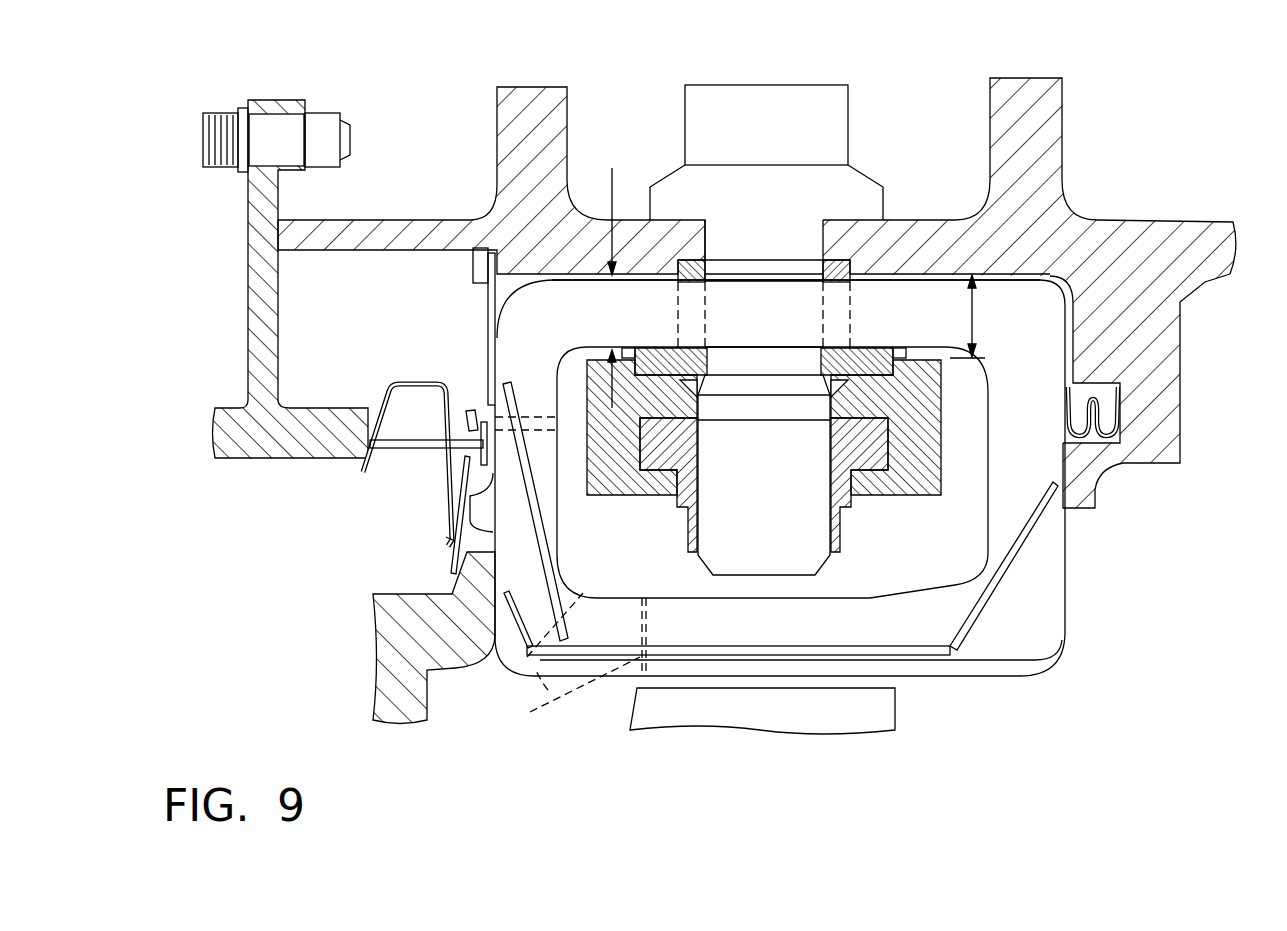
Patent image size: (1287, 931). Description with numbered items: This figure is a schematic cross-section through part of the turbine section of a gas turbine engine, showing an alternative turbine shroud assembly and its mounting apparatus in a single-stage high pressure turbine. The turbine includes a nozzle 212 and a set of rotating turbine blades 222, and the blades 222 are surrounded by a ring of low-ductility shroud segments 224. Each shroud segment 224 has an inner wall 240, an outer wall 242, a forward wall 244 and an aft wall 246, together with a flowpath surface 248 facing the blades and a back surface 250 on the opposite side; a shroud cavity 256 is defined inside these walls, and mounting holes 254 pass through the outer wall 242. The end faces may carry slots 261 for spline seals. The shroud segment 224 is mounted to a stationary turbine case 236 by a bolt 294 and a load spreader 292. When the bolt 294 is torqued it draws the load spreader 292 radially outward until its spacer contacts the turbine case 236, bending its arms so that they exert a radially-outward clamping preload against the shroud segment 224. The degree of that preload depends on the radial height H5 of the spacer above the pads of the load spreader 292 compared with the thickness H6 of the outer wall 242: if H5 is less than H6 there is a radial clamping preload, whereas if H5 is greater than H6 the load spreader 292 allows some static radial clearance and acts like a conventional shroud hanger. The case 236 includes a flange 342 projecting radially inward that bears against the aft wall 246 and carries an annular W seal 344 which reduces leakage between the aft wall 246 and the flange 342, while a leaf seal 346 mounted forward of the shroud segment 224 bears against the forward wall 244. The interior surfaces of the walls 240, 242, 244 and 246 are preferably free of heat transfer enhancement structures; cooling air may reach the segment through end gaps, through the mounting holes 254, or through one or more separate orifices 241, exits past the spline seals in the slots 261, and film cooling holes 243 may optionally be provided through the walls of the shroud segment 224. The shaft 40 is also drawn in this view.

The shaft 40 is at (778, 418).
The nozzle 212 is at (395, 665).
The turbine blades 222 is at (774, 721).
The shroud segment 224 is at (1035, 684).
The turbine case 236 is at (1064, 208).
The inner wall 240 is at (630, 635).
The orifice 241 is at (500, 415).
The outer wall 242 is at (672, 327).
The film cooling holes 243 is at (562, 554).
The forward wall 244 is at (525, 320).
The aft wall 246 is at (1030, 375).
The flowpath surface 248 is at (930, 676).
The back surface 250 is at (998, 273).
The mounting holes 254 is at (855, 332).
The shroud cavity 256 is at (947, 556).
The slots 261 is at (1010, 575).
The load spreader 292 is at (613, 510).
The bolt 294 is at (777, 142).
The flange 342 is at (1070, 497).
The W seal 344 is at (1105, 415).
The leaf seal 346 is at (455, 573).
The radial height H5 is at (972, 308).
The thickness H6 is at (612, 182).